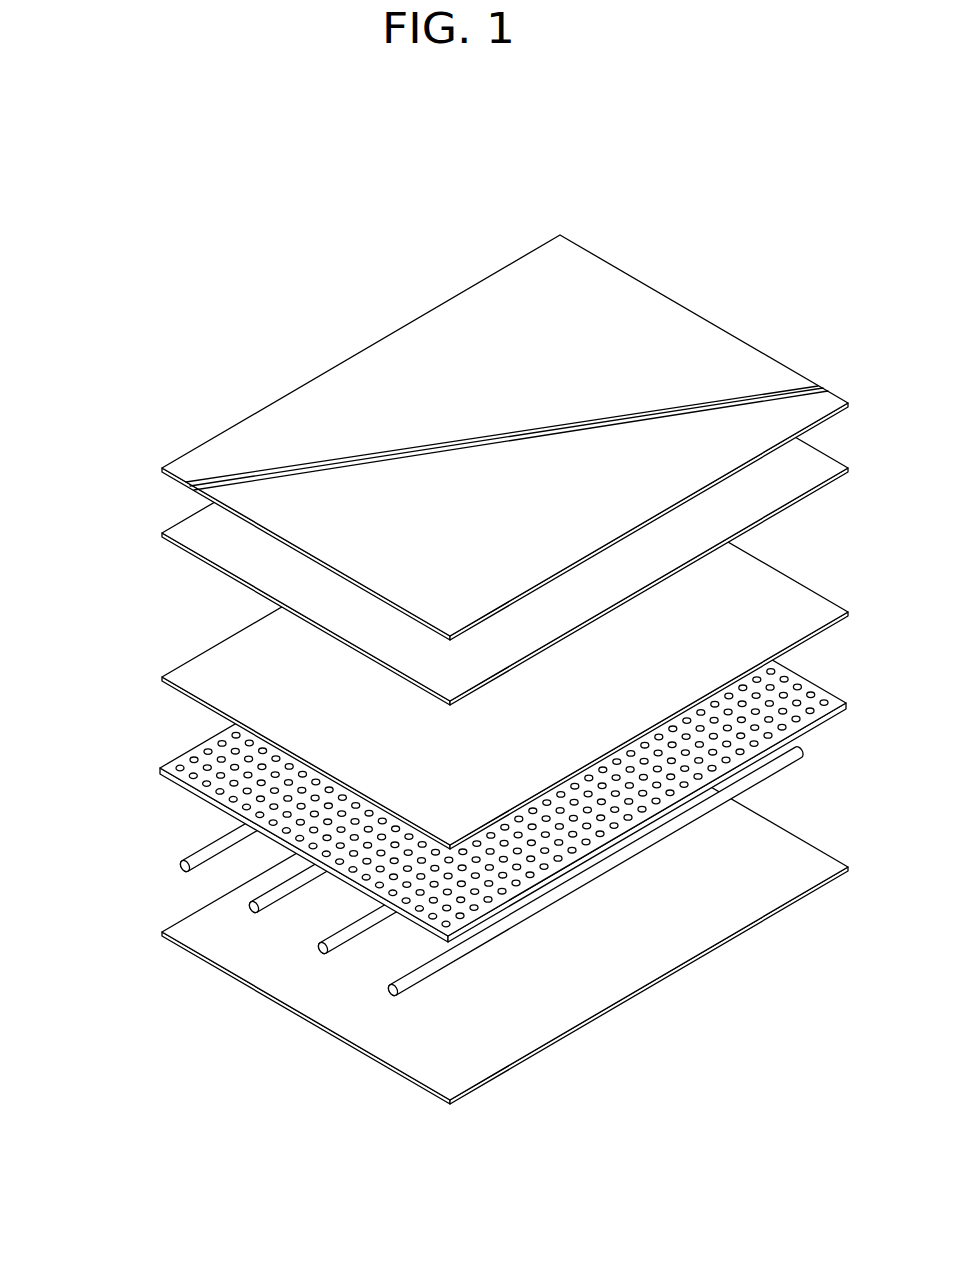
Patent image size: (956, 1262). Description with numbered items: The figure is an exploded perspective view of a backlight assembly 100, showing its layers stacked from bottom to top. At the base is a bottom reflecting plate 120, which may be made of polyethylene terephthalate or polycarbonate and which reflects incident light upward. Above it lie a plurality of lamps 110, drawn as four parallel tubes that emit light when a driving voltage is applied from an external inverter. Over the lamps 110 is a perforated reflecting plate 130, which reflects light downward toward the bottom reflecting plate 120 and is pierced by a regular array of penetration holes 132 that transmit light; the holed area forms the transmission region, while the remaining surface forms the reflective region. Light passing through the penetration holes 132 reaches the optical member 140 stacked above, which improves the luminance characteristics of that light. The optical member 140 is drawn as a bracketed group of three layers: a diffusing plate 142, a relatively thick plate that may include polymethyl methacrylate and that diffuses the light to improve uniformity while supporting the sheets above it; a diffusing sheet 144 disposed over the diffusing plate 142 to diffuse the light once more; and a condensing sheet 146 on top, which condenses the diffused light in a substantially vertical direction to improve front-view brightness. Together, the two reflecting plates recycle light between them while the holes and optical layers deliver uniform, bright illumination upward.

The backlight assembly 100 is at (325, 310).
The lamps 110 is at (189, 862).
The bottom reflecting plate 120 is at (168, 936).
The perforated reflecting plate 130 is at (180, 782).
The penetration holes 132 is at (172, 758).
The optical member 140 is at (431, 542).
The diffusing plate 142 is at (210, 656).
The diffusing sheet 144 is at (186, 538).
The condensing sheet 146 is at (70, 655).